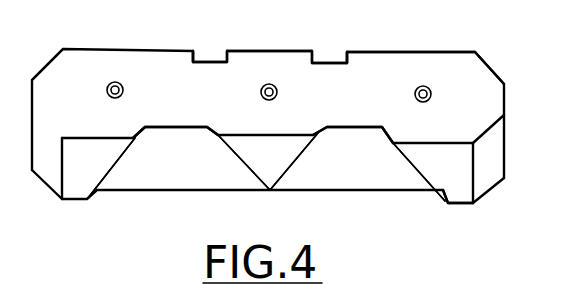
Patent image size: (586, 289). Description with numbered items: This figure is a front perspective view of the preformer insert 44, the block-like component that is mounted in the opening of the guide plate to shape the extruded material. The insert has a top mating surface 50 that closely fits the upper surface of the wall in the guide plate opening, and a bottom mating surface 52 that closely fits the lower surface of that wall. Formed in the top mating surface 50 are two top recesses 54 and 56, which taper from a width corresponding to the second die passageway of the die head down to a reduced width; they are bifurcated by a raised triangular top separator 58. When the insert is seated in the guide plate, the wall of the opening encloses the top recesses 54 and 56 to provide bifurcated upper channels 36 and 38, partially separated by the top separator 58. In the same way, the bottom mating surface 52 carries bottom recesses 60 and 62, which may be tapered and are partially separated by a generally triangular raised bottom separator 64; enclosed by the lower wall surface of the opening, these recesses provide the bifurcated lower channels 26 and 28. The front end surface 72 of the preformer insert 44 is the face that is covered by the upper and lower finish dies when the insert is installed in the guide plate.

The lower channel 26 is at (165, 140).
The lower channel 28 is at (352, 143).
The upper channel 36 is at (213, 61).
The upper channel 38 is at (323, 62).
The preformer insert 44 is at (475, 80).
The top mating surface 50 is at (413, 51).
The bottom mating surface 52 is at (452, 180).
The top recess 54 is at (341, 61).
The top recess 56 is at (197, 60).
The top separator 58 is at (253, 53).
The bottom recess 60 is at (175, 172).
The bottom recess 62 is at (343, 178).
The bottom separator 64 is at (270, 190).
The front end surface 72 is at (60, 72).